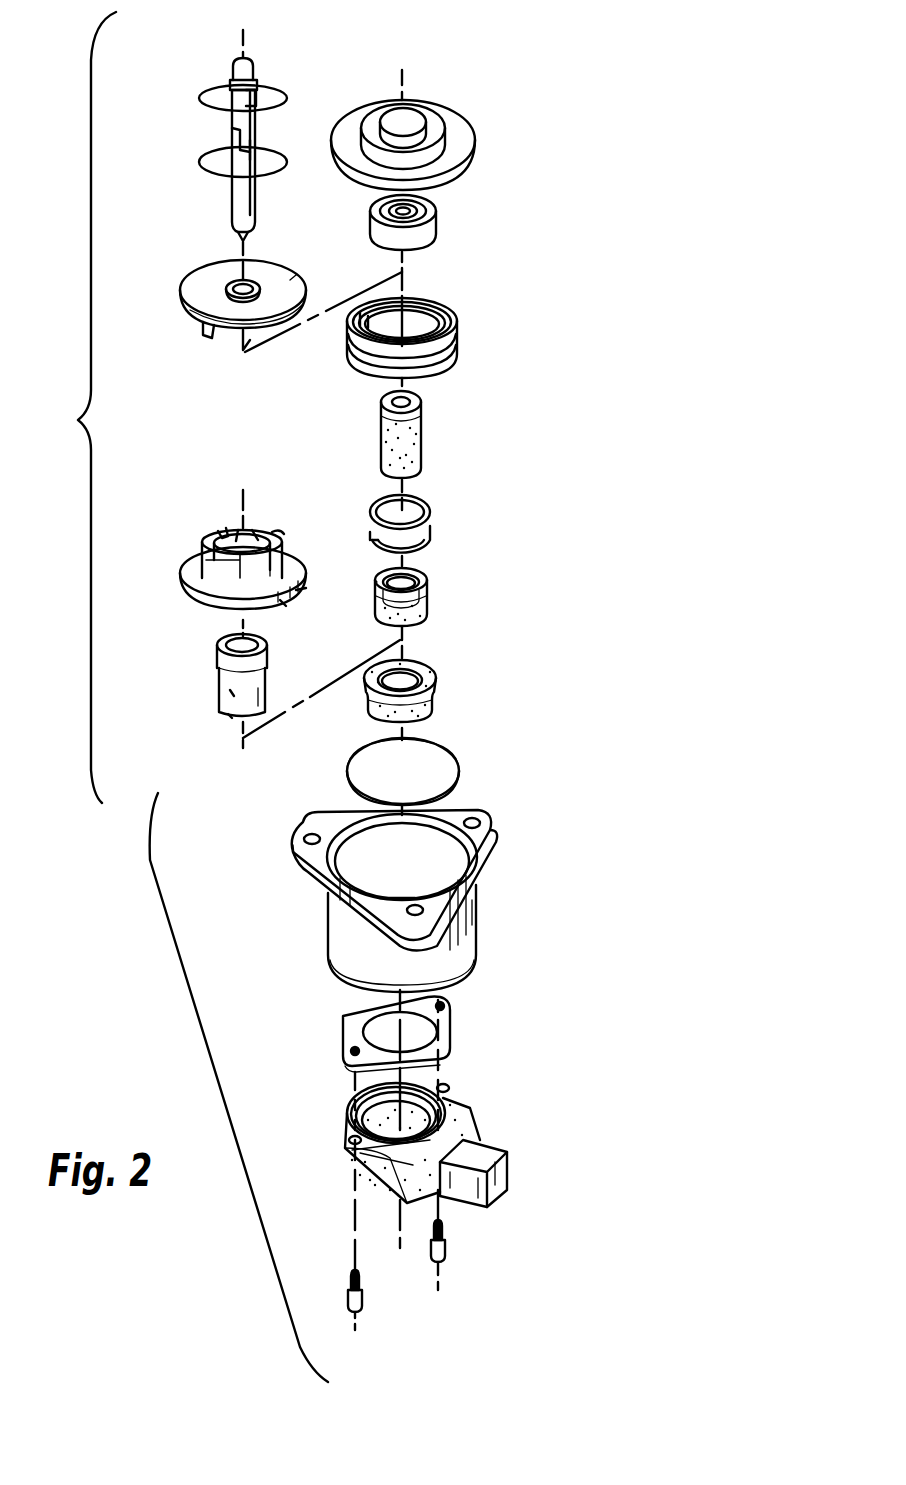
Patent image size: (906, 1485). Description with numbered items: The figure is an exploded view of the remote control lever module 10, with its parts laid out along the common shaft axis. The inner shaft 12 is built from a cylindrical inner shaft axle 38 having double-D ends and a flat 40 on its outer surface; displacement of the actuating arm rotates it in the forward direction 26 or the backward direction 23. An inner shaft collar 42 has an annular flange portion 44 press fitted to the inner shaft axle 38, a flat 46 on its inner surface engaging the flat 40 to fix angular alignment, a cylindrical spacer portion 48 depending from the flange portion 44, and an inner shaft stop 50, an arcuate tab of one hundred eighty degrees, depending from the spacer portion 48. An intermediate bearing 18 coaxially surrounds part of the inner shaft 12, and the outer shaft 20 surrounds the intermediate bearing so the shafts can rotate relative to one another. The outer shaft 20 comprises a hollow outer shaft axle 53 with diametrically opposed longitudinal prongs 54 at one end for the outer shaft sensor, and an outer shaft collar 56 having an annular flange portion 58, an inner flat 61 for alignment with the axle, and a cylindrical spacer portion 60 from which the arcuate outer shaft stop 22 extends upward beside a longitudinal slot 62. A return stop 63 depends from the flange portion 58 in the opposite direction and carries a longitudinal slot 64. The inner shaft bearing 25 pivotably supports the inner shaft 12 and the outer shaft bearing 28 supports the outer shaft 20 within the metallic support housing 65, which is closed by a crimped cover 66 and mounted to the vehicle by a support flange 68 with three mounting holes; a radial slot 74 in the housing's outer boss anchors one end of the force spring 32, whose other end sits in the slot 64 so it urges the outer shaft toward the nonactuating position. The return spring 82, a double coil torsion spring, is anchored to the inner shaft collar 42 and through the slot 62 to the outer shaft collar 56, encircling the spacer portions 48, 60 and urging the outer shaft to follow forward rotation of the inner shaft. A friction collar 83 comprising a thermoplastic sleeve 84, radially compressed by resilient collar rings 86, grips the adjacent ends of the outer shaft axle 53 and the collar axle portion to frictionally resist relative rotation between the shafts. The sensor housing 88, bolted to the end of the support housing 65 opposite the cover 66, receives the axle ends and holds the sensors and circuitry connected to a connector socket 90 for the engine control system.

The remote control lever module 10 is at (517, 975).
The inner shaft 12 is at (228, 78).
The intermediate bearing 18 is at (428, 436).
The outer shaft 20 is at (212, 683).
The outer shaft stop 22 is at (280, 531).
The backward rotation 23 is at (272, 98).
The inner shaft bearing 25 is at (446, 219).
The forward direction 26 is at (268, 168).
The outer shaft bearing 28 is at (448, 682).
The force spring 32 is at (462, 765).
The inner shaft axle 38 is at (258, 152).
The flat 40 is at (231, 140).
The inner shaft collar 42 is at (178, 276).
The annular flange portion 44 is at (294, 280).
The flat 46 is at (238, 283).
The cylindrical spacer portion 48 is at (250, 350).
The inner shaft stop 50 is at (207, 334).
The outer shaft axle 53 is at (232, 697).
The longitudinal prongs 54 is at (230, 718).
The outer shaft collar 56 is at (258, 520).
The annular flange portion 58 is at (196, 556).
The cylindrical spacer portion 60 is at (222, 580).
The flat 61 is at (206, 572).
The longitudinal slot 62 is at (222, 532).
The return stop 63 is at (306, 598).
The longitudinal slot 64 is at (284, 610).
The support housing 65 is at (288, 850).
The cover 66 is at (480, 136).
The support flange 68 is at (490, 848).
The radial slot 74 is at (393, 896).
The return spring 82 is at (468, 324).
The friction collar 83 is at (370, 578).
The sleeve 84 is at (428, 592).
The resilient collar rings 86 is at (434, 520).
The sensor housing 88 is at (340, 1105).
The connector socket 90 is at (508, 1183).